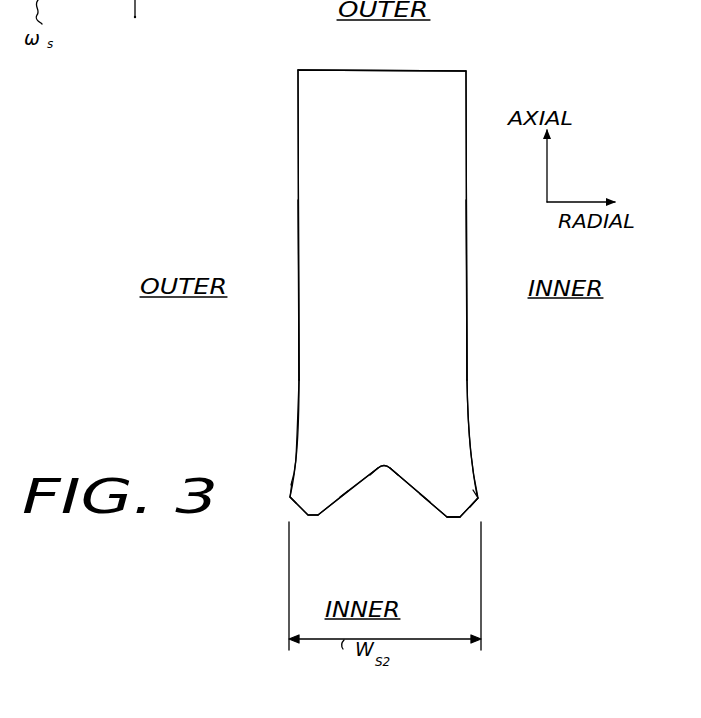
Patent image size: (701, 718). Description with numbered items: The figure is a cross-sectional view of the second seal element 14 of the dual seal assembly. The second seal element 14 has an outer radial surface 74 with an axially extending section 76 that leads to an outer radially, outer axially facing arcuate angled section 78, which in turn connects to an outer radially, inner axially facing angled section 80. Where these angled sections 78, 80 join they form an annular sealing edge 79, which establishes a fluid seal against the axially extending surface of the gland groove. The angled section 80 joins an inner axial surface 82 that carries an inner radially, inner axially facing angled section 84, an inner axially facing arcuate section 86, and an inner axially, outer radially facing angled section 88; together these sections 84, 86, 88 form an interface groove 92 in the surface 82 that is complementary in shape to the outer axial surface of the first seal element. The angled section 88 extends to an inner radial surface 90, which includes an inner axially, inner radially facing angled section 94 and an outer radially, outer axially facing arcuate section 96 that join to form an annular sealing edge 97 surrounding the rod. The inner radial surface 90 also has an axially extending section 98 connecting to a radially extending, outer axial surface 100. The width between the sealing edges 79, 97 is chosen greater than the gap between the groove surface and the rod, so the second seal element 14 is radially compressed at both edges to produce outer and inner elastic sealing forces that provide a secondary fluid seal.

The second seal element 14 is at (485, 58).
The outer radial surface 74 is at (265, 330).
The axially extending section 76 is at (298, 263).
The outer radially, outer axially facing arcuate angled section 78 is at (291, 482).
The annular sealing edge 79 is at (282, 497).
The outer radially, inner axially facing angled section 80 is at (296, 504).
The inner axial surface 82 is at (383, 550).
The inner radially, inner axially facing angled section 84 is at (341, 498).
The inner axially facing arcuate section 86 is at (388, 472).
The inner axially, outer radially facing angled section 88 is at (433, 510).
The inner radial surface 90 is at (488, 314).
The interface groove 92 is at (376, 492).
The inner axially, inner radially facing angled section 94 is at (476, 506).
The outer radially, outer axially facing arcuate section 96 is at (477, 487).
The annular sealing edge 97 is at (487, 497).
The axially extending section 98 is at (468, 268).
The outer axial surface 100 is at (362, 70).